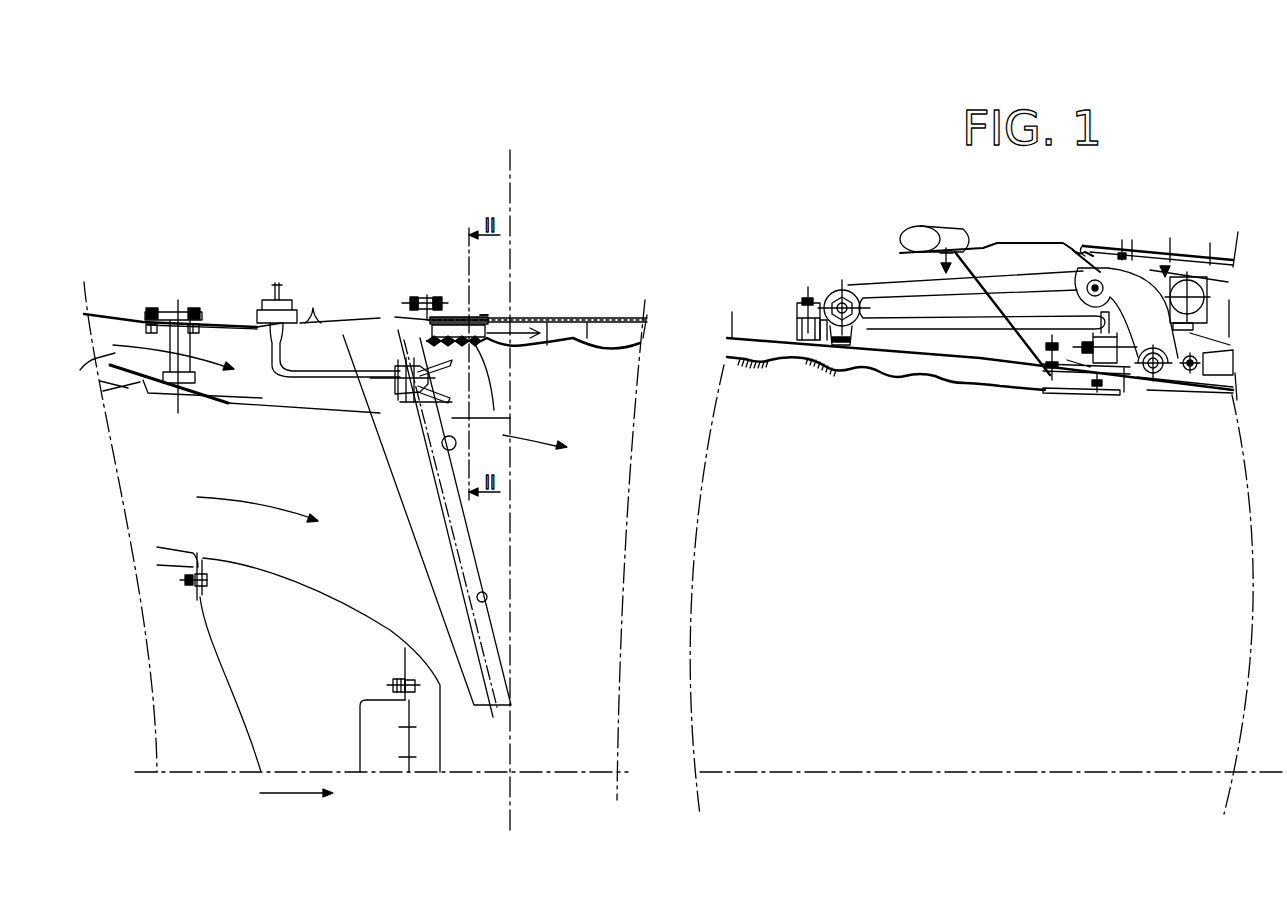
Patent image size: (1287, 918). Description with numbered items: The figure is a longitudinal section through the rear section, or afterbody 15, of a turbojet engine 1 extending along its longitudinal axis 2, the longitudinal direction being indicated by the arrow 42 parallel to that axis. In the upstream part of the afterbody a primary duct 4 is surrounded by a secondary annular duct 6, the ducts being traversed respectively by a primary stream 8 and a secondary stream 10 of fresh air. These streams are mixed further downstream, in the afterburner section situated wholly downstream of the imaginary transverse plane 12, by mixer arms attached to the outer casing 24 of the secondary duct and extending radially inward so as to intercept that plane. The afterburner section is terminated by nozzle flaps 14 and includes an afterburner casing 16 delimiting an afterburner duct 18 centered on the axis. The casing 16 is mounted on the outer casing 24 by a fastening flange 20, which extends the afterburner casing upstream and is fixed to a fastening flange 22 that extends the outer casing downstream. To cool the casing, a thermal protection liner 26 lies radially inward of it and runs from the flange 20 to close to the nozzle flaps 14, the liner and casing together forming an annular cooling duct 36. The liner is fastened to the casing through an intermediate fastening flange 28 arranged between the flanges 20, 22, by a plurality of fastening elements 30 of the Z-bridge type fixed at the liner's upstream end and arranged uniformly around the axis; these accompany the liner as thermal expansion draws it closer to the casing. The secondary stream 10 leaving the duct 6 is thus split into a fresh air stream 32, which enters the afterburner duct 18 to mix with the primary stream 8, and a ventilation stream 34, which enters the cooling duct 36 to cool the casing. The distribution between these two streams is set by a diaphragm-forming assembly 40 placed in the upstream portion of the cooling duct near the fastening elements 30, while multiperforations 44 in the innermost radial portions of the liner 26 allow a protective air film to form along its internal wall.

The turbojet engine 1 is at (178, 215).
The longitudinal axis 2 is at (955, 776).
The primary duct 4 is at (225, 457).
The secondary annular duct 6 is at (256, 362).
The primary stream 8 is at (277, 507).
The secondary stream 10 is at (93, 368).
The imaginary transverse plane 12 is at (510, 152).
The nozzle flaps 14 is at (1187, 250).
The afterbody 15 is at (690, 303).
The afterburner casing 16 is at (623, 317).
The afterburner duct 18 is at (841, 583).
The fastening flange 20 is at (460, 313).
The fastening flange 22 is at (407, 343).
The outer casing 24 is at (113, 315).
The thermal protection liner 26 is at (873, 372).
The intermediate fastening flange 28 is at (418, 325).
The fastening elements 30 is at (470, 340).
The fresh air stream 32 is at (487, 418).
The ventilation stream 34 is at (377, 347).
The annular cooling duct 36 is at (754, 341).
The diaphragm-forming assembly 40 is at (570, 323).
The longitudinal direction 42 is at (283, 797).
The multiperforations 44 is at (824, 375).